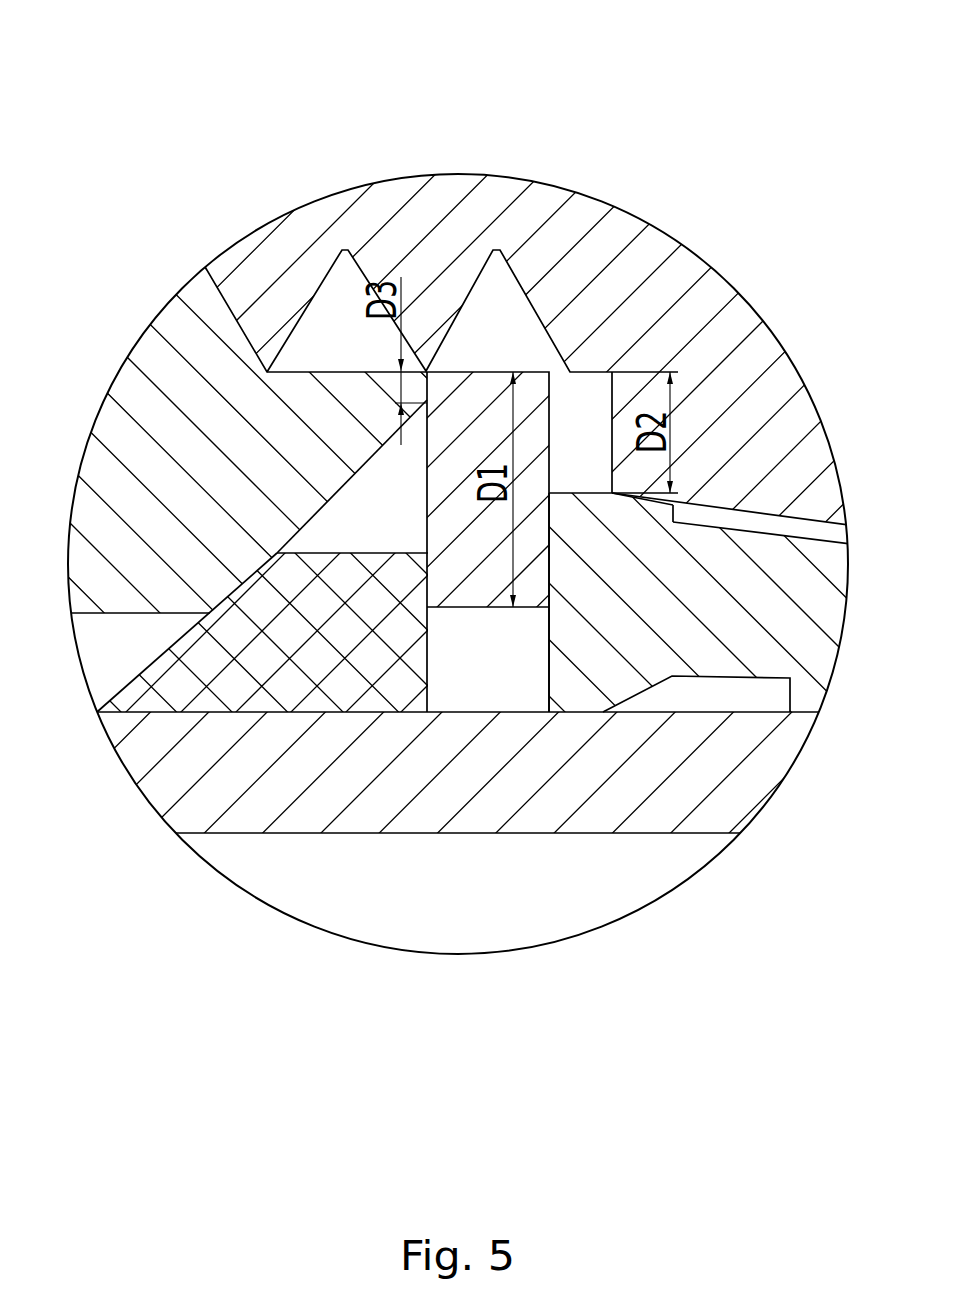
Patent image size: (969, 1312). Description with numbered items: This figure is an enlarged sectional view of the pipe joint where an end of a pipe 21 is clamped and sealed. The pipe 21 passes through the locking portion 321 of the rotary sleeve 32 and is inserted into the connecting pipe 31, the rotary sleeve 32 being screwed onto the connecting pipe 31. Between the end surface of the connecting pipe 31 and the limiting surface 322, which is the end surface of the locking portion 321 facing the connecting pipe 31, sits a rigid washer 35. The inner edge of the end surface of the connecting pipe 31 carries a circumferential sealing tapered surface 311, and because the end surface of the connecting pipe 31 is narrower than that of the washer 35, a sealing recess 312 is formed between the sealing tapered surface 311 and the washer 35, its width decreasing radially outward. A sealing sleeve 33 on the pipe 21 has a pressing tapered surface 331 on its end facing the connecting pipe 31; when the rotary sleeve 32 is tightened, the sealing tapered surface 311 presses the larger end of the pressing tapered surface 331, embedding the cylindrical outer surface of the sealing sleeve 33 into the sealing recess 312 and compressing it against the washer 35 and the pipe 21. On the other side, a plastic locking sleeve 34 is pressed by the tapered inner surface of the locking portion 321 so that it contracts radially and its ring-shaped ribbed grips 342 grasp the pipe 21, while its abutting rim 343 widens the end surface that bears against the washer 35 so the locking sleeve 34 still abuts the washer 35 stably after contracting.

The pipe 21 is at (180, 768).
The connecting pipe 31 is at (157, 432).
The sealing tapered surface 311 is at (340, 485).
The sealing recess 312 is at (390, 500).
The rotary sleeve 32 is at (520, 217).
The locking portion 321 is at (692, 415).
The limiting surface 322 is at (607, 440).
The sealing sleeve 33 is at (323, 643).
The pressing tapered surface 331 is at (185, 648).
The locking sleeve 34 is at (722, 610).
The ribbed grip 342 is at (580, 690).
The abutting rim 343 is at (603, 503).
The washer 35 is at (490, 548).